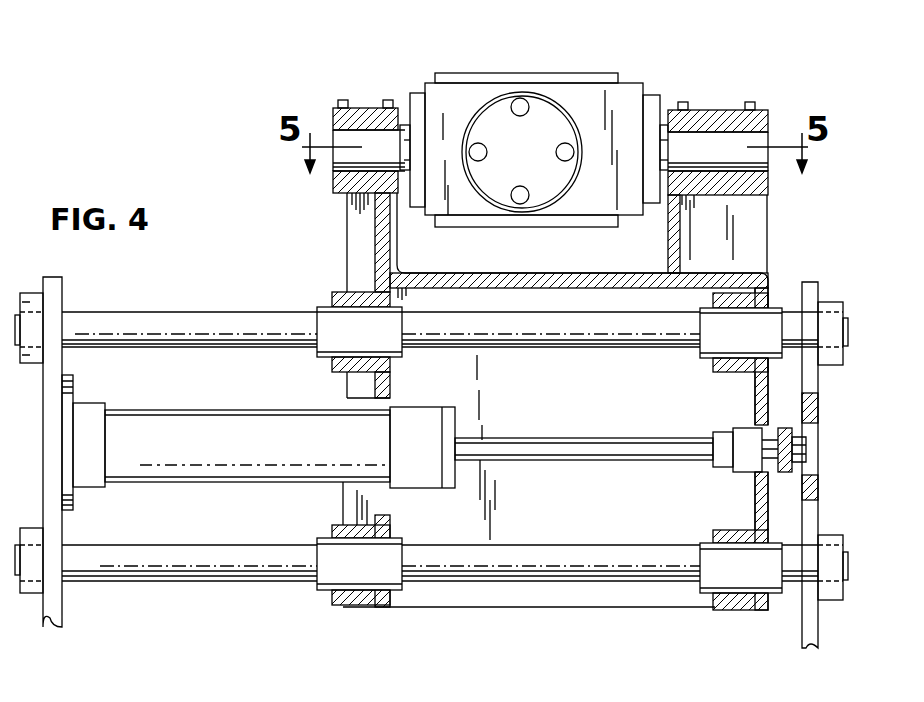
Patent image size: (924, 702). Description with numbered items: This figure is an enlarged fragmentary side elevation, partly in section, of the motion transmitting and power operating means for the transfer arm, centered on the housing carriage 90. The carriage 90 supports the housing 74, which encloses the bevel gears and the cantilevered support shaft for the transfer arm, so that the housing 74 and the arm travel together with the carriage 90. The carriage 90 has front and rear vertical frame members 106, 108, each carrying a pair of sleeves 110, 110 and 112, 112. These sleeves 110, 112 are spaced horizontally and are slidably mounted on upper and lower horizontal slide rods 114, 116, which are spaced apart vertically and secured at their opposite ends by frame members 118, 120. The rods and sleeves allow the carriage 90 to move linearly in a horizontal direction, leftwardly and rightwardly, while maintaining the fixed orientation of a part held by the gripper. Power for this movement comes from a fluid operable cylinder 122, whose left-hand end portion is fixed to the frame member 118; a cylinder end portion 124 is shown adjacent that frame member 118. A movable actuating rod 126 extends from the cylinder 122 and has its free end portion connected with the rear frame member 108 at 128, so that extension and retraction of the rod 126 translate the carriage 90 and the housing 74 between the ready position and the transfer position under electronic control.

The housing 74 is at (621, 95).
The housing carriage 90 is at (778, 251).
The front vertical frame member 106 is at (385, 384).
The rear vertical frame member 108 is at (760, 396).
The sleeves 110 is at (333, 318).
The sleeves 112 is at (766, 322).
The upper horizontal slide rod 114 is at (240, 325).
The lower horizontal slide rod 116 is at (205, 567).
The frame member 118 is at (55, 290).
The frame member 120 is at (812, 300).
The fluid operable cylinder 122 is at (212, 470).
The cylinder end cap 124 is at (67, 400).
The movable actuating rod 126 is at (500, 445).
The connection 128 is at (748, 460).